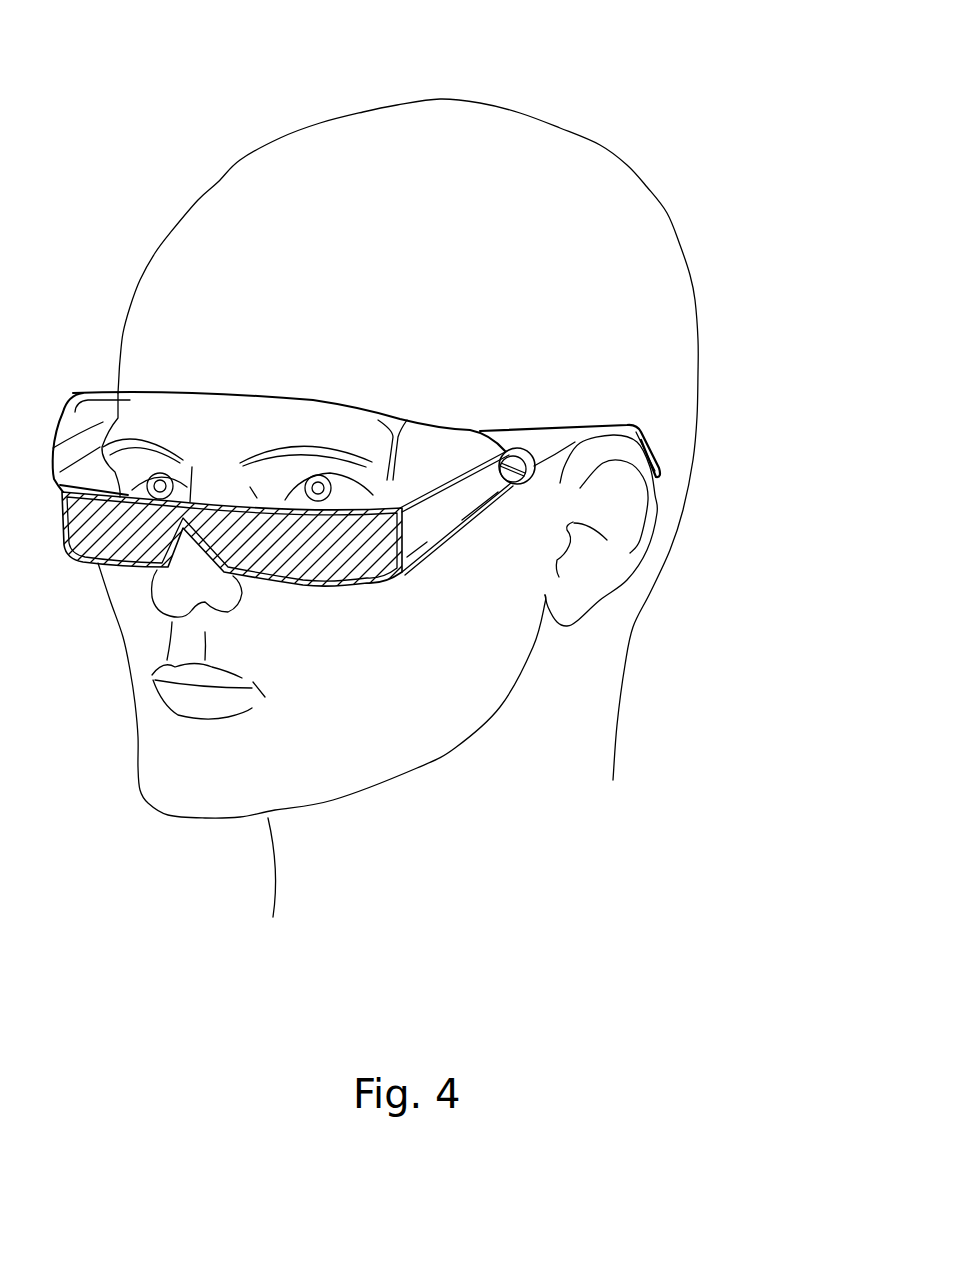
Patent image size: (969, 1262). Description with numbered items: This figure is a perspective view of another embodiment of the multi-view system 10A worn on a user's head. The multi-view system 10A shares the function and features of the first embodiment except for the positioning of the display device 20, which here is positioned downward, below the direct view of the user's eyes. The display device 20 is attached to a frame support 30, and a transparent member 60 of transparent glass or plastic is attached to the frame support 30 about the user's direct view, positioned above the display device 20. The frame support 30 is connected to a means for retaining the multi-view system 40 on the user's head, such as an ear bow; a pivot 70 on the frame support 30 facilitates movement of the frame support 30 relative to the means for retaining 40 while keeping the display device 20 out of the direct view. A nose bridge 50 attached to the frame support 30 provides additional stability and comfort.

The multi-view system 10A is at (422, 422).
The display device 20 is at (368, 563).
The frame support 30 is at (348, 404).
The means for retaining the multi-view system 40 is at (590, 426).
The nose bridge 50 is at (247, 580).
The transparent member 60 is at (367, 473).
The pivot 70 is at (522, 481).